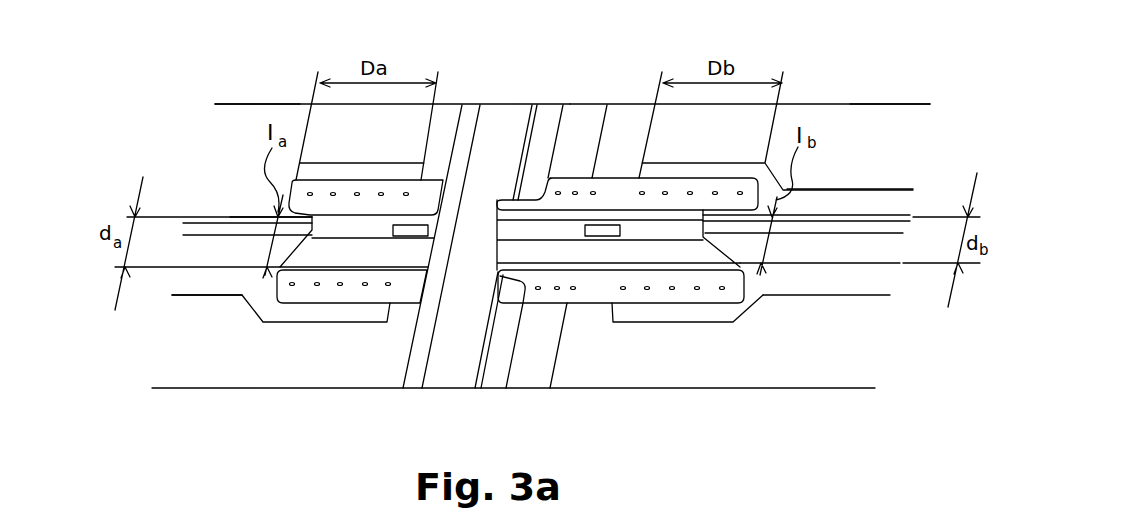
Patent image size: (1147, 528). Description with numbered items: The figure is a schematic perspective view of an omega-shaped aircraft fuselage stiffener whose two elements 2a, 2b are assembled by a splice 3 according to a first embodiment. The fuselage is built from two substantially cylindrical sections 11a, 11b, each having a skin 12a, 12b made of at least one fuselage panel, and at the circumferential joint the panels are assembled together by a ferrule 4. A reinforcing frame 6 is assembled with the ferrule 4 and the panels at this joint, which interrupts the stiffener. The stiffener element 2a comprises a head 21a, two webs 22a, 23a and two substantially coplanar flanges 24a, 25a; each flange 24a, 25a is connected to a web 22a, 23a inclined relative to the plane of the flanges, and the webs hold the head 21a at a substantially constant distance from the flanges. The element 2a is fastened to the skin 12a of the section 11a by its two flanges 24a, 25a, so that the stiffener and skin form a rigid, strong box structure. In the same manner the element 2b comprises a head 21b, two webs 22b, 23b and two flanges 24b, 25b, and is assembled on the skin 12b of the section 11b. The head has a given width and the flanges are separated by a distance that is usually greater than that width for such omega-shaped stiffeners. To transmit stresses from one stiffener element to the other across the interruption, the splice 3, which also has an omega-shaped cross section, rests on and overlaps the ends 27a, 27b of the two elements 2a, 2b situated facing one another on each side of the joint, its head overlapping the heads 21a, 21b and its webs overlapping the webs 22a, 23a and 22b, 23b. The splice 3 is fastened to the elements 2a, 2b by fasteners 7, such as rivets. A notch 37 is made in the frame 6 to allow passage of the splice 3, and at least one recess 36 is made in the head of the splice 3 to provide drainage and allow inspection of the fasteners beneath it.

The stiffener element 2a is at (271, 330).
The stiffener element 2b is at (766, 326).
The splice 3 is at (598, 314).
The ferrule 4 is at (583, 115).
The reinforcing frame 6 is at (497, 127).
The fasteners 7 is at (593, 190).
The fuselage section 11a is at (290, 96).
The fuselage section 11b is at (825, 94).
The skin 12a is at (245, 117).
The skin 12b is at (872, 117).
The head 21a is at (200, 217).
The head 21b is at (797, 228).
The web 22a is at (207, 253).
The web 22b is at (842, 247).
The web 23a is at (232, 223).
The web 23b is at (885, 217).
The flange 24a is at (233, 295).
The flange 24b is at (872, 295).
The flange 25a is at (245, 217).
The flange 25b is at (840, 190).
The end 27a is at (350, 323).
The end 27b is at (670, 323).
The recess 36 is at (419, 226).
The notch 37 is at (490, 227).